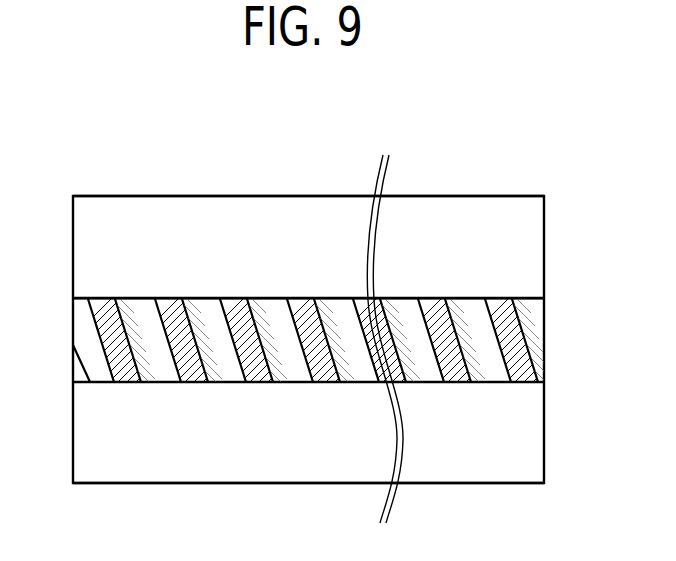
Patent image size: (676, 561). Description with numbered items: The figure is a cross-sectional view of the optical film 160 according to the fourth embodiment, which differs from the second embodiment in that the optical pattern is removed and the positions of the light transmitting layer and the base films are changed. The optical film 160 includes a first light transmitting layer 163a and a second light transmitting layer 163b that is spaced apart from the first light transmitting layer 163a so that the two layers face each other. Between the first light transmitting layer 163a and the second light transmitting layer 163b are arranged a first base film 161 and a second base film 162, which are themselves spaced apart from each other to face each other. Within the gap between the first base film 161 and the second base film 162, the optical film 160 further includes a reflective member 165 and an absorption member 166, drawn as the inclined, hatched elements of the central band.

The optical film 160 is at (70, 112).
The first base film 161 is at (147, 315).
The second base film 162 is at (233, 362).
The first light transmitting layer 163a is at (544, 433).
The second light transmitting layer 163b is at (544, 250).
The reflective member 165 is at (172, 317).
The absorption member 166 is at (188, 315).